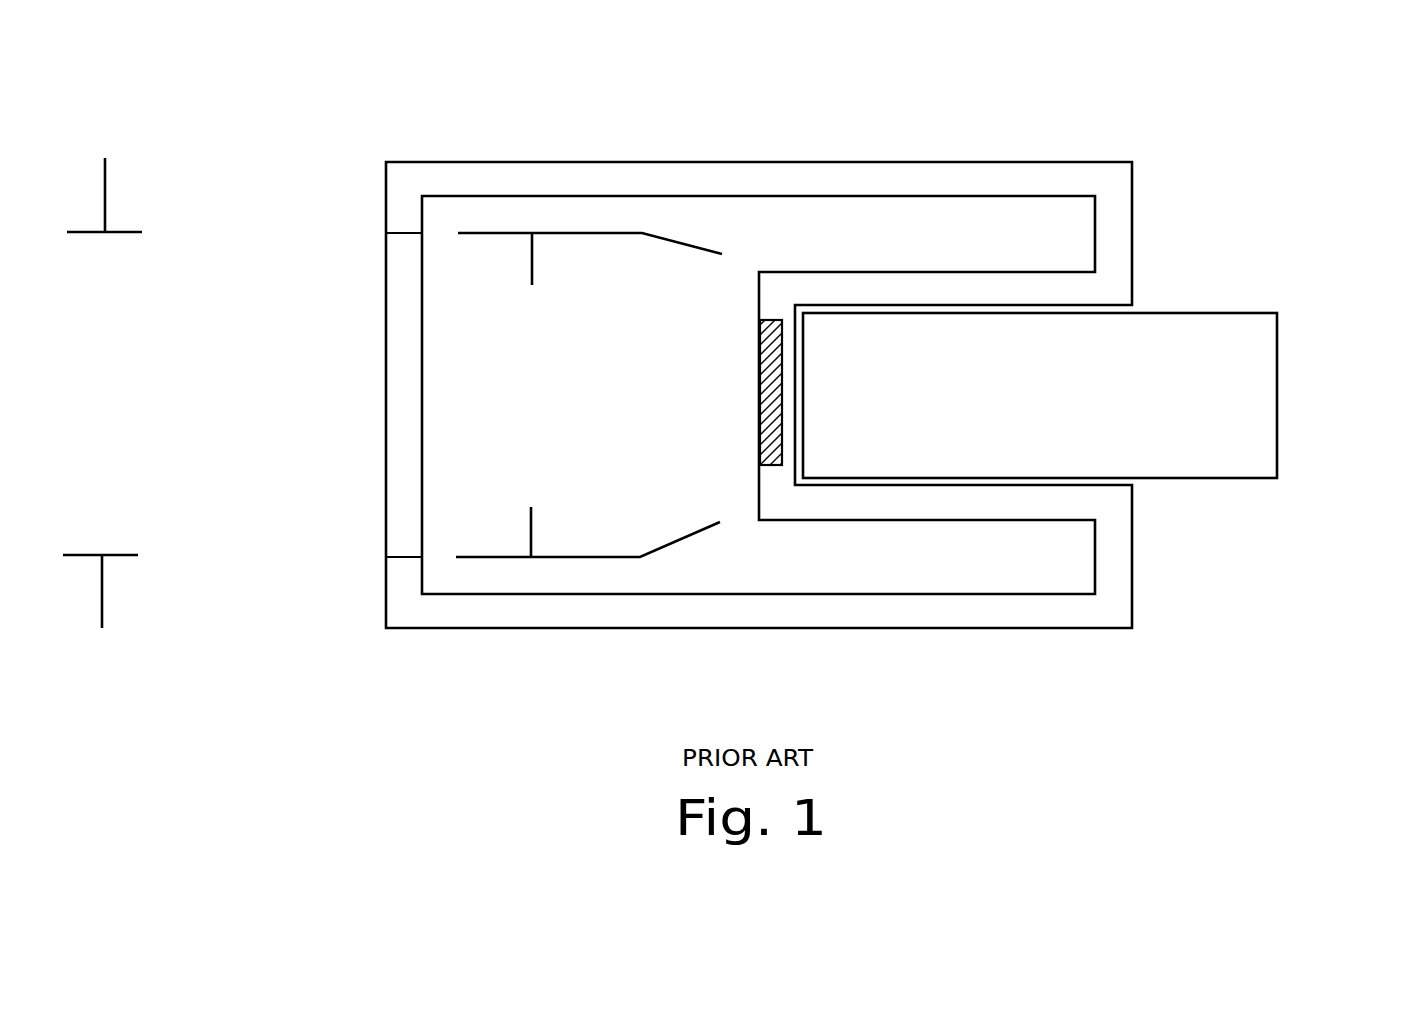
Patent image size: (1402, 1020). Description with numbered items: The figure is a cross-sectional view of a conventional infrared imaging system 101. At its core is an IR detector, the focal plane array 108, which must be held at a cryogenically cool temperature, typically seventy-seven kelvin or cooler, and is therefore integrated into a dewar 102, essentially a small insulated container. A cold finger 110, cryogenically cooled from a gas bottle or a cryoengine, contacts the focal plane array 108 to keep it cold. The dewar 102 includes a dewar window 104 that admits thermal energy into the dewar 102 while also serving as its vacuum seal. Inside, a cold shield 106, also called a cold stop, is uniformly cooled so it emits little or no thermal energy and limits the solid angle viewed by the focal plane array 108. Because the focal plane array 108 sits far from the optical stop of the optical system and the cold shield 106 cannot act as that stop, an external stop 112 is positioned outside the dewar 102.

The infrared imaging system 101 is at (370, 79).
The dewar 102 is at (759, 433).
The dewar window 104 is at (556, 395).
The cold shield 106 is at (589, 395).
The focal plane array 108 is at (625, 400).
The cold finger 110 is at (1075, 456).
The external stop 112 is at (214, 393).